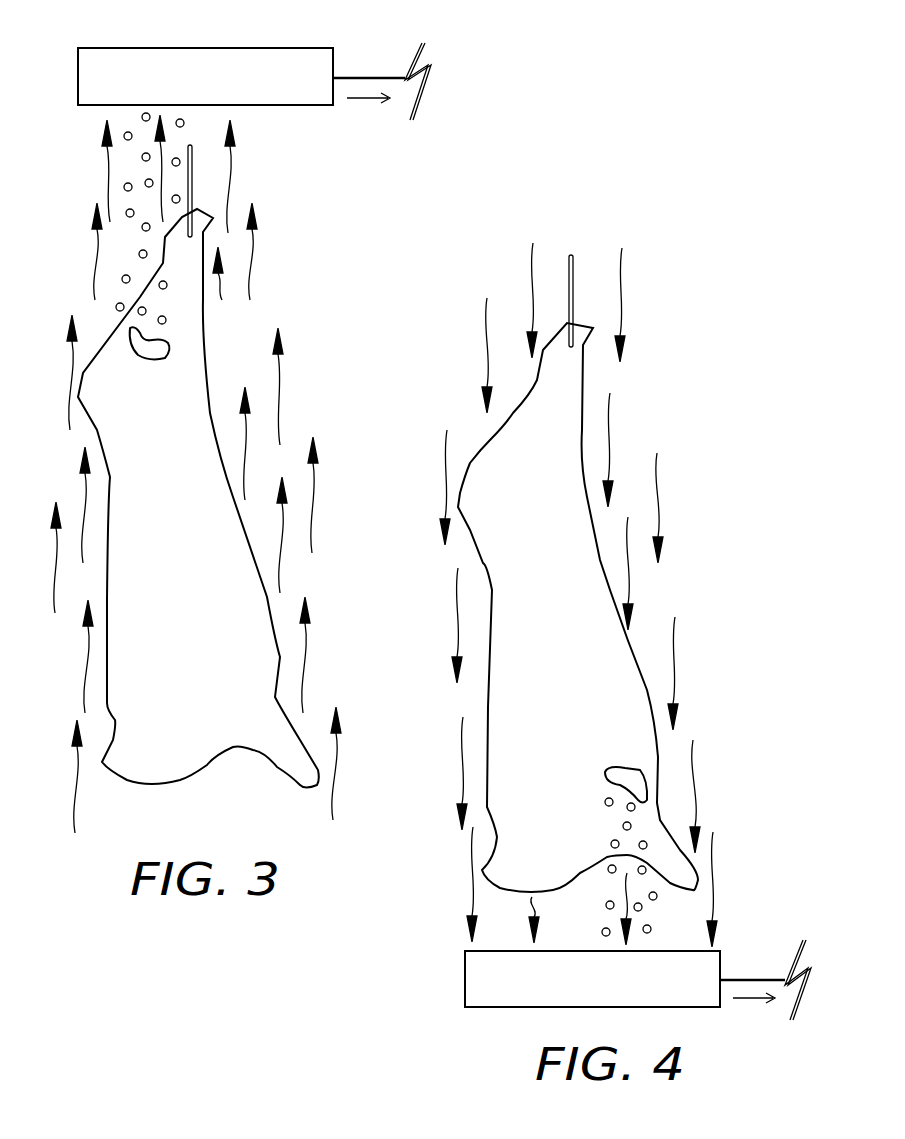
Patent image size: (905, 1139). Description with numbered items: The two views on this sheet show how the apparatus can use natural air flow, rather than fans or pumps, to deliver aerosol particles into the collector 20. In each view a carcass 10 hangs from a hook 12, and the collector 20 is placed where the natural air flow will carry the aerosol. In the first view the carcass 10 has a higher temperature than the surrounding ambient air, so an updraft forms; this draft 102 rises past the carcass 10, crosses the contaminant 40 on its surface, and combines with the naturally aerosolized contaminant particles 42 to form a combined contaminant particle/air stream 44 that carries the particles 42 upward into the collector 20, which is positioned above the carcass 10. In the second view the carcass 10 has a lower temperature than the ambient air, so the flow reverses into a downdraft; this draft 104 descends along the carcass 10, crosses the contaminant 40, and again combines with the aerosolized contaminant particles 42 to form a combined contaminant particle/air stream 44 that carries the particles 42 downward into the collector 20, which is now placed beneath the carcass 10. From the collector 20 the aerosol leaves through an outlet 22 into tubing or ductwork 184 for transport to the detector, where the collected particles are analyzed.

In FIG. 3, the carcass 10 is at (80, 370).
In FIG. 4, the carcass 10 is at (490, 438).
In FIG. 3, the hook 12 is at (193, 183).
In FIG. 4, the hook 12 is at (567, 283).
In FIG. 3, the collector 20 is at (182, 48).
In FIG. 4, the collector 20 is at (463, 978).
In FIG. 3, the collector outlet line 22 is at (347, 77).
In FIG. 4, the collector outlet line 22 is at (740, 978).
In FIG. 3, the contaminant 40 is at (118, 318).
In FIG. 4, the contaminant 40 is at (643, 780).
In FIG. 3, the contaminant particles 42 is at (125, 278).
In FIG. 4, the contaminant particles 42 is at (628, 824).
In FIG. 3, the combined contaminant particle/air stream 44 is at (123, 176).
In FIG. 4, the combined contaminant particle/air stream 44 is at (672, 915).
In FIG. 3, the draft 102 is at (88, 680).
In FIG. 4, the draft 104 is at (612, 430).
In FIG. 3, the tubing or ductwork 184 is at (350, 100).
In FIG. 4, the tubing or ductwork 184 is at (742, 1000).